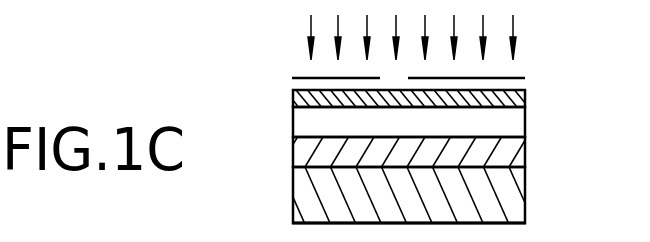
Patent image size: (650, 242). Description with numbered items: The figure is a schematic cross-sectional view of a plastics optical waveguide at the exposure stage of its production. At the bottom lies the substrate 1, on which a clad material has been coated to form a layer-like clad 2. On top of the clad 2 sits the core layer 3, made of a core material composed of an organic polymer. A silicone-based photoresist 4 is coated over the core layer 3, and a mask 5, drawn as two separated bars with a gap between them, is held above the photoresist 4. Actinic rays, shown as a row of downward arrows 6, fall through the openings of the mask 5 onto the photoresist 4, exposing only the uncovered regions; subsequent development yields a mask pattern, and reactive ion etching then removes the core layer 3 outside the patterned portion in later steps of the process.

The substrate 1 is at (516, 207).
The clad 2 is at (518, 154).
The core layer 3 is at (518, 124).
The silicone-based photoresist 4 is at (525, 95).
The mask 5 is at (518, 78).
The irradiating light 6 is at (513, 30).